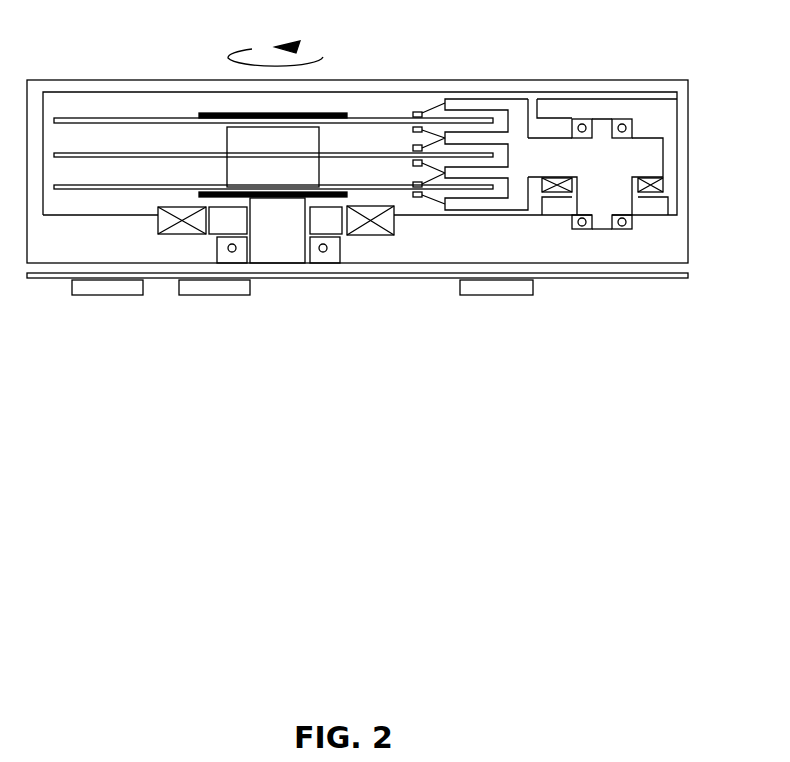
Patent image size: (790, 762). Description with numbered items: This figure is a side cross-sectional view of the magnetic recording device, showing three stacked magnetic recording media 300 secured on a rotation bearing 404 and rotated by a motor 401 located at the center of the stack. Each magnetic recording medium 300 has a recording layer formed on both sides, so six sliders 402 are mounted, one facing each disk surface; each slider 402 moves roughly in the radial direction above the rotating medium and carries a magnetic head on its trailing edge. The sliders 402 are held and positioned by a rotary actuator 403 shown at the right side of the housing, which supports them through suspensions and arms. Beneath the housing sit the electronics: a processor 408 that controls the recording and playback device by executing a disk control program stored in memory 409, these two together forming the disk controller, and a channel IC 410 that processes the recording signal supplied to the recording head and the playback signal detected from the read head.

The magnetic recording medium 300 is at (72, 117).
The motor 401 is at (347, 235).
The slider 402 is at (412, 108).
The rotary actuator 403 is at (650, 153).
The rotation bearing 404 is at (277, 240).
The processor 408 is at (110, 298).
The memory 409 is at (217, 298).
The channel IC 410 is at (507, 298).